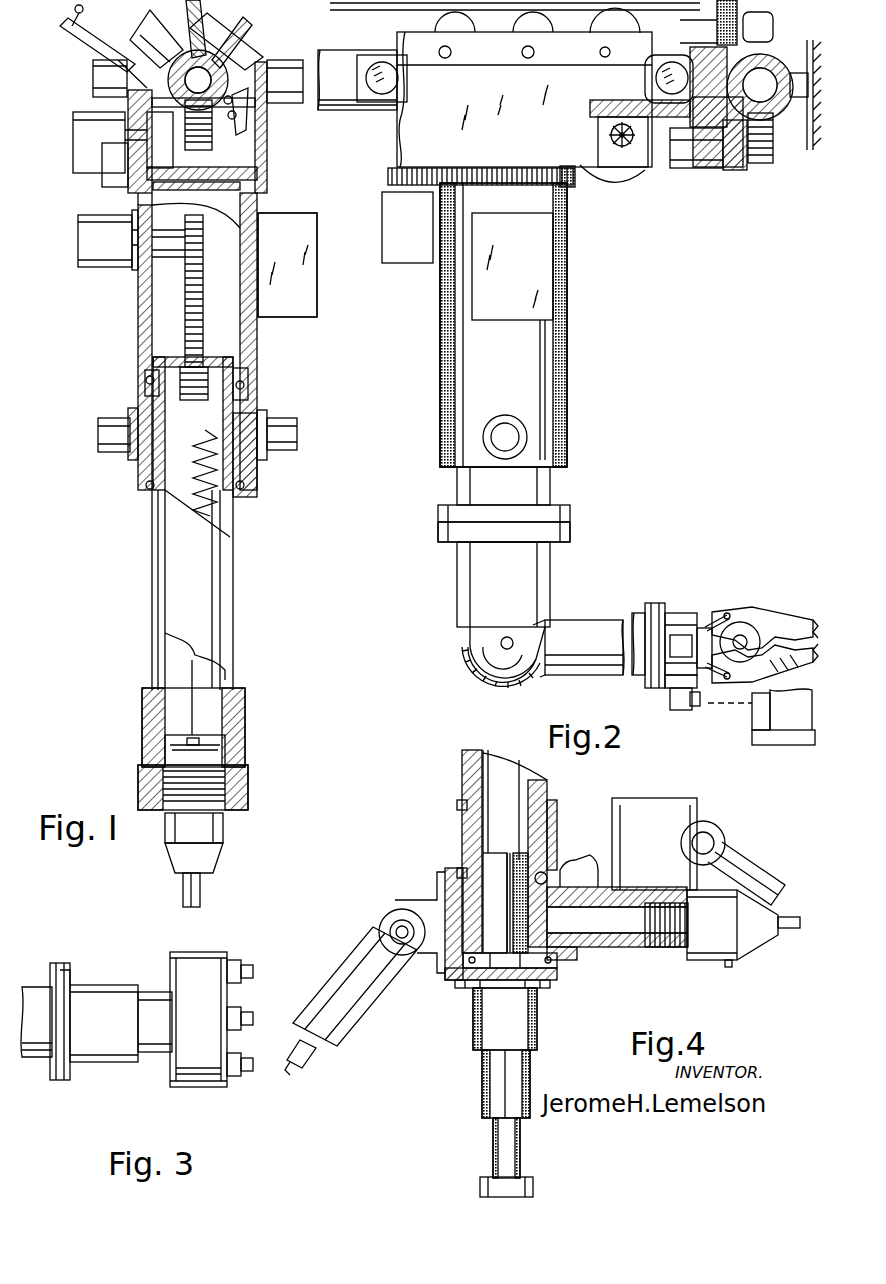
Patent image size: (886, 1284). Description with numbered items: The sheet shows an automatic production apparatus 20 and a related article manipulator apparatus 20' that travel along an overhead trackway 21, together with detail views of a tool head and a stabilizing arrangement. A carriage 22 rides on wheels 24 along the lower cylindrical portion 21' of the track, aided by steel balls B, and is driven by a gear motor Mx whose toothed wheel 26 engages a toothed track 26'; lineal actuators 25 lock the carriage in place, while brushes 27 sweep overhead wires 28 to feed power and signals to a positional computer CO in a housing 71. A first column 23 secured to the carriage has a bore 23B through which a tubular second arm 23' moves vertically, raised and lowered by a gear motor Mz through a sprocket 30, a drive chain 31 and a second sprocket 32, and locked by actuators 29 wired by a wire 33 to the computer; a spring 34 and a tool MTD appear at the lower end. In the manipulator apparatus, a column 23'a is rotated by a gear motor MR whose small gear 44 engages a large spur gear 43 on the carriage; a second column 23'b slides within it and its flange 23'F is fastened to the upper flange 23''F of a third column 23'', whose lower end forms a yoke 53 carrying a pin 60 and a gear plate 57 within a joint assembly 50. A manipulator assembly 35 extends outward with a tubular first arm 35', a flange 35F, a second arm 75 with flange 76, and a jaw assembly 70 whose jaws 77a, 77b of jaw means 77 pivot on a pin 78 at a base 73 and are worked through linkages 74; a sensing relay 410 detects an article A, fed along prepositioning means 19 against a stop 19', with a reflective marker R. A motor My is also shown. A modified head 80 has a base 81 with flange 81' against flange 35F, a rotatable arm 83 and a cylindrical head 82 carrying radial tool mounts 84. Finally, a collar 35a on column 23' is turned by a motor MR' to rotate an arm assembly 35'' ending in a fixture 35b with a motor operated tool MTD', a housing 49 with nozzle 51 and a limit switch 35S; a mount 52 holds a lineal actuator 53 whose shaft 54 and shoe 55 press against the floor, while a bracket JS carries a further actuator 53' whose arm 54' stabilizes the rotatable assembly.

In FIG. 2, the prepositioning means 19 is at (779, 756).
In FIG. 2, the stop 19' is at (737, 727).
In FIG. 1, the automatic production apparatus 20 is at (145, 768).
In FIG. 2, the automatic article manipulator apparatus 20' is at (550, 325).
In FIG. 2, the overhead support or trackway 21 is at (515, 17).
In FIG. 2, the lower cylindrical portion of overhead track 21' is at (357, 97).
In FIG. 1, the carriage 22 is at (132, 40).
In FIG. 2, the carriage 22 is at (504, 141).
In FIG. 1, the first arm or column 23 is at (220, 276).
In FIG. 1, the second arm 23' is at (168, 612).
In FIG. 4, the second arm 23' is at (480, 851).
In FIG. 2, the column 23'a is at (479, 325).
In FIG. 2, the second cylindrical column 23'b is at (536, 484).
In FIG. 2, the flange 23'F is at (539, 517).
In FIG. 2, the third column 23'' is at (540, 584).
In FIG. 2, the upper flange 23''F is at (545, 533).
In FIG. 1, the bore 23B is at (165, 305).
In FIG. 1, the wheels 24 is at (150, 18).
In FIG. 2, the wheels 24 is at (458, 22).
In FIG. 1, the lineal actuators or servos 25 is at (93, 72).
In FIG. 2, the lineal actuators or servos 25 is at (380, 95).
In FIG. 1, the toothed wheel 26 is at (227, 131).
In FIG. 2, the toothed wheel 26 is at (623, 167).
In FIG. 2, the toothed track 26' is at (694, 103).
In FIG. 1, the electrical brushes or sliding elements 27 is at (70, 43).
In FIG. 1, the overhead wires 28 is at (75, 10).
In FIG. 1, the lineal actuators or solenoids 29 is at (98, 432).
In FIG. 2, the lineal actuators or solenoids 29 is at (520, 438).
In FIG. 1, the pulley or sprocket wheel 30 is at (185, 255).
In FIG. 1, the drive belt or chain 31 is at (190, 325).
In FIG. 1, the second pulley or sprocket 32 is at (182, 390).
In FIG. 1, the wire 33 is at (250, 393).
In FIG. 1, the spring 34 is at (223, 495).
In FIG. 2, the manipulator assembly 35 is at (578, 630).
In FIG. 2, the first arm 35' is at (595, 657).
In FIG. 3, the first arm 35' is at (36, 1047).
In FIG. 4, the arm assembly 35'' is at (611, 905).
In FIG. 2, the flange 35F is at (650, 605).
In FIG. 3, the flange 35F is at (58, 963).
In FIG. 4, the collar 35a is at (462, 986).
In FIG. 4, the fixture 35b is at (716, 962).
In FIG. 4, the limit switch 35S is at (730, 968).
In FIG. 2, the large spur gear 43 is at (560, 175).
In FIG. 2, the small spur gear 44 is at (388, 178).
In FIG. 4, the housing 49 is at (662, 852).
In FIG. 2, the joint assembly 50 is at (480, 696).
In FIG. 4, the nozzle or probe 51 is at (738, 862).
In FIG. 4, the mount 52 is at (473, 1008).
In FIG. 2, the lineal actuator 53 is at (476, 652).
In FIG. 4, the lineal actuator 53 is at (488, 1084).
In FIG. 4, the further actuator 53' is at (355, 986).
In FIG. 4, the shaft 54 is at (485, 1148).
In FIG. 4, the arm 54' is at (313, 1065).
In FIG. 4, the shoe 55 is at (480, 1183).
In FIG. 2, the gear plate 57 is at (505, 690).
In FIG. 2, the pin or shaft 60 is at (503, 650).
In FIG. 2, the jaw assembly 70 is at (751, 596).
In FIG. 1, the housing 71 is at (317, 300).
In FIG. 2, the base 73 is at (688, 710).
In FIG. 2, the linkages 74 is at (708, 624).
In FIG. 2, the second arm 75 is at (681, 645).
In FIG. 2, the flange 76 is at (662, 604).
In FIG. 2, the jaw means 77 is at (735, 610).
In FIG. 2, the jaw 77a is at (790, 620).
In FIG. 2, the jaw 77b is at (764, 661).
In FIG. 2, the pin 78 is at (745, 635).
In FIG. 3, the modified tool or manipulator head 80 is at (193, 1090).
In FIG. 3, the base 81 is at (104, 1023).
In FIG. 3, the flange 81' is at (90, 956).
In FIG. 3, the cylindrical head 82 is at (214, 1072).
In FIG. 4, the cylindrical head 82 is at (666, 925).
In FIG. 3, the cylindrical arm or base 83 is at (158, 1053).
In FIG. 3, the tools or manipulator mounts 84 is at (240, 1078).
In FIG. 2, the sensing relay 410 is at (668, 700).
In FIG. 2, the article A is at (795, 724).
In FIG. 1, the steel balls B is at (252, 110).
In FIG. 4, the steel balls B is at (452, 966).
In FIG. 1, the positional computing mechanism CO is at (317, 278).
In FIG. 2, the positional computing mechanism CO is at (545, 282).
In FIG. 4, the bracket JS is at (387, 905).
In FIG. 2, the reversible gear motor MR is at (407, 227).
In FIG. 4, the motor MR' is at (470, 890).
In FIG. 1, the tool MTD is at (150, 884).
In FIG. 4, the motor operated tool MTD' is at (774, 948).
In FIG. 1, the reversible electrical gear motor Mx is at (82, 145).
In FIG. 2, the reversible electrical gear motor Mx is at (610, 180).
In FIG. 2, the y-axis motor My is at (683, 170).
In FIG. 1, the reversible gear motor Mz is at (88, 242).
In FIG. 2, the reflective marker R is at (748, 705).